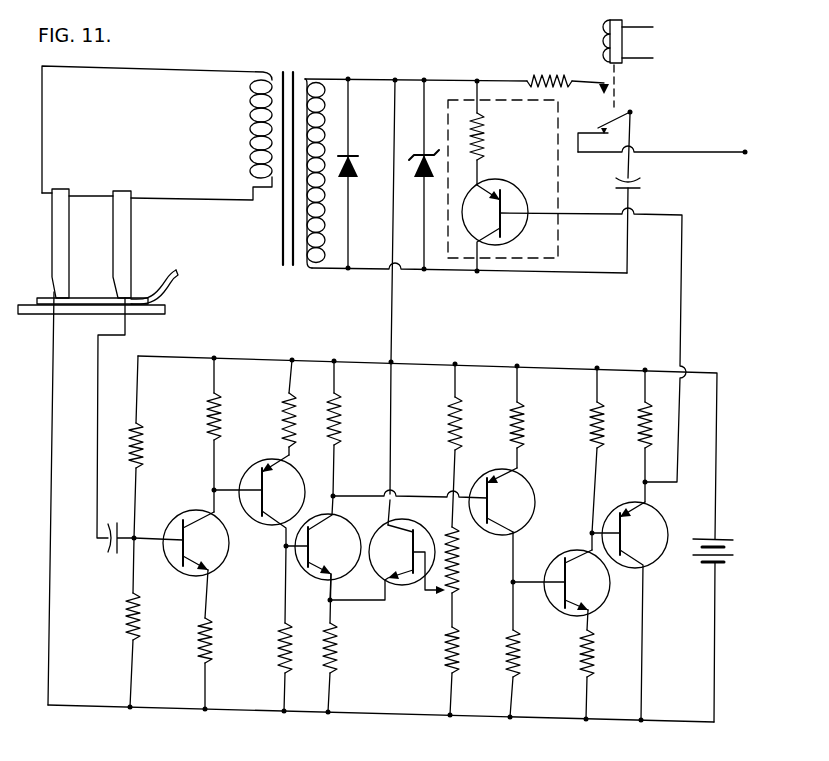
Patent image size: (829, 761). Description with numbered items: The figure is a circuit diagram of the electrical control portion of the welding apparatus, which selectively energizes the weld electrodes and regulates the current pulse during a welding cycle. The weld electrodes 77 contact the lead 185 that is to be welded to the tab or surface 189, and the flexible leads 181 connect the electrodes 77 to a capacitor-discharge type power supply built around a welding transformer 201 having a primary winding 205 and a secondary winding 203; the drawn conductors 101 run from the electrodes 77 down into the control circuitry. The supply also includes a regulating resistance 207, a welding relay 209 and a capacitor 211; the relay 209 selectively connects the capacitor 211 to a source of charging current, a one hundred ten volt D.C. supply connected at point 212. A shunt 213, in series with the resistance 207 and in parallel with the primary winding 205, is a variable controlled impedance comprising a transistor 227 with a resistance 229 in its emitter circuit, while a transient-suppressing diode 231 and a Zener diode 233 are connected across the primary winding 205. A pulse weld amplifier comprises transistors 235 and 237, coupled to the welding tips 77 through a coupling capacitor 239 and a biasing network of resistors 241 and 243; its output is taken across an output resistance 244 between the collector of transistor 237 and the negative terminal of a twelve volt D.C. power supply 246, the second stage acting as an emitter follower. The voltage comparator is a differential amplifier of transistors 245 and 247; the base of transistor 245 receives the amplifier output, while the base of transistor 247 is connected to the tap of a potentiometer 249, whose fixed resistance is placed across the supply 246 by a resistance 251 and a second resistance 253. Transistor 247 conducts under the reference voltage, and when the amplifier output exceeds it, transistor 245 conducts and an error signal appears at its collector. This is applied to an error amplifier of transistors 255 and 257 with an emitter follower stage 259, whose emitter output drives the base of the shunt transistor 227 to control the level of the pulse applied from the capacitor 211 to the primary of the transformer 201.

The weld electrodes 77 is at (116, 233).
The electrode leads 101 is at (96, 406).
The flexible leads 181 is at (160, 73).
The lead 185 is at (150, 290).
The tab or surface 189 is at (140, 314).
The welding transformer 201 is at (289, 64).
The secondary winding 203 is at (250, 122).
The primary winding 205 is at (318, 92).
The regulating resistance 207 is at (552, 79).
The welding relay 209 is at (630, 83).
The capacitor 211 is at (640, 193).
The point 212 is at (745, 151).
The shunt 213 is at (557, 237).
The transistor 227 is at (507, 238).
The resistance 229 is at (483, 142).
The transient-suppressing diode 231 is at (352, 178).
The Zener diode 233 is at (410, 166).
The transistor 235 is at (184, 512).
The transistor 237 is at (267, 460).
The coupling capacitor 239 is at (108, 550).
The resistor 241 is at (142, 452).
The resistor 243 is at (140, 628).
The output resistance 244 is at (280, 636).
The transistor 245 is at (356, 572).
The 12 v. D.C. power supply 246 is at (727, 562).
The transistor 247 is at (405, 588).
The potentiometer 249 is at (458, 575).
The resistance 251 is at (450, 432).
The second resistance 253 is at (458, 668).
The transistor 255 is at (530, 520).
The transistor 257 is at (551, 614).
The emitter follower stage 259 is at (655, 570).